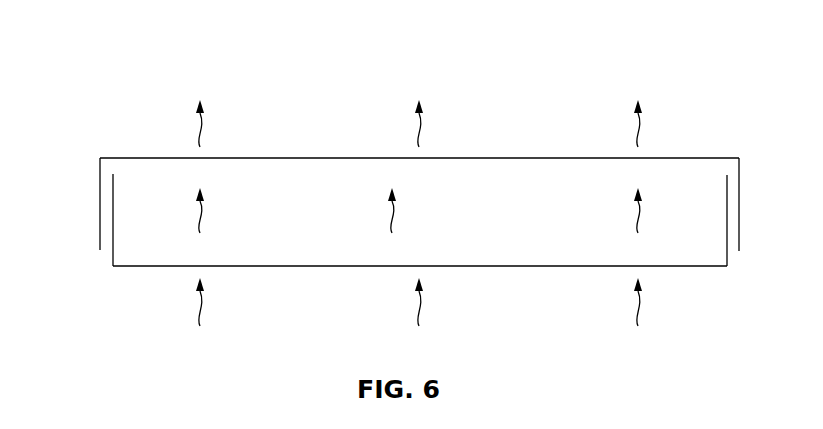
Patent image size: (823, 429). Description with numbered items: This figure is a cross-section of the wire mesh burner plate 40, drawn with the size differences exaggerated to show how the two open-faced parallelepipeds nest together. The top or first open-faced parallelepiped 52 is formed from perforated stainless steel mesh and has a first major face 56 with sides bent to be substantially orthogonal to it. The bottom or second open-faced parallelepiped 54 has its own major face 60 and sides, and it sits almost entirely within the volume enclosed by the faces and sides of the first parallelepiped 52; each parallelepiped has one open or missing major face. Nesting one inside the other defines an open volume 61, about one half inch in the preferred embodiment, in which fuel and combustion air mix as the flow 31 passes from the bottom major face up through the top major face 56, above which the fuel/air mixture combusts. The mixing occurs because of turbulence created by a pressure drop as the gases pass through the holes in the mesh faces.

The wire mesh burner plate 40 is at (103, 69).
The air flow 31 is at (203, 126).
The first open-faced parallelepiped 52 is at (687, 158).
The second open-faced parallelepiped 54 is at (166, 267).
The first major face 56 is at (153, 158).
The first major face of second parallelepiped 60 is at (675, 267).
The open volume 61 is at (435, 224).